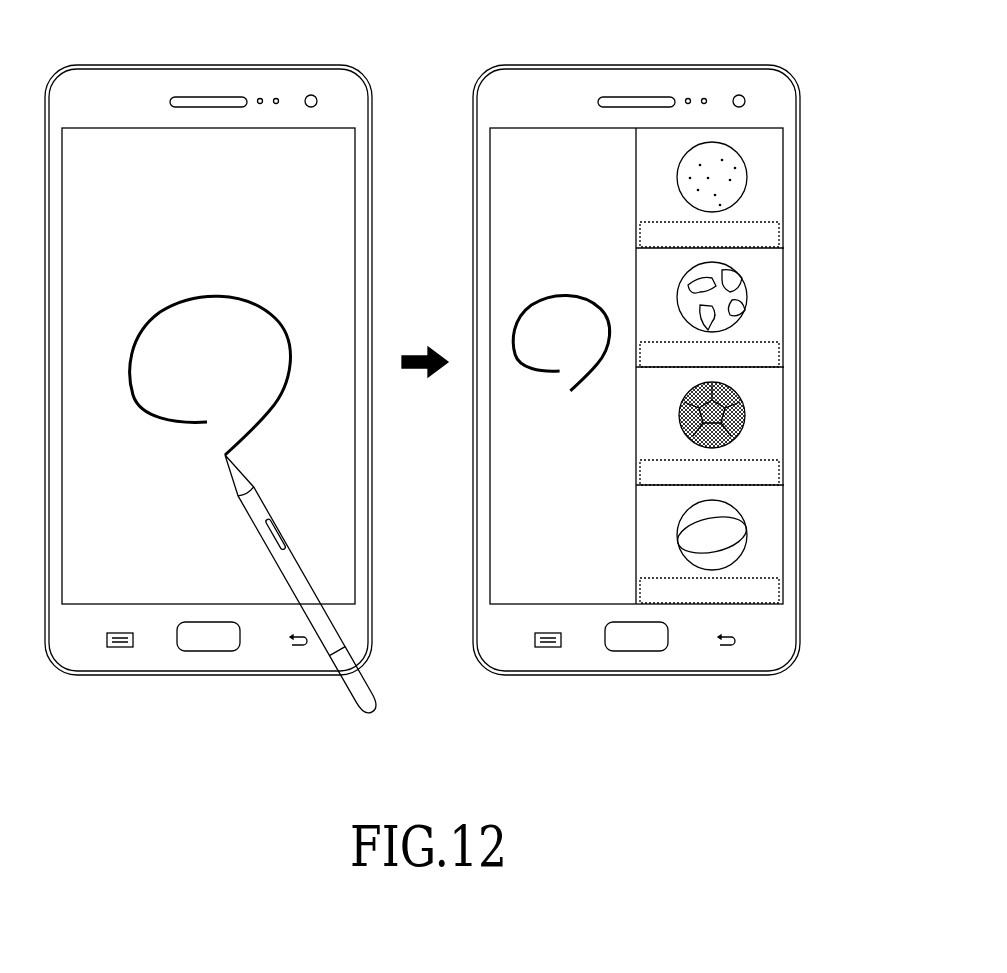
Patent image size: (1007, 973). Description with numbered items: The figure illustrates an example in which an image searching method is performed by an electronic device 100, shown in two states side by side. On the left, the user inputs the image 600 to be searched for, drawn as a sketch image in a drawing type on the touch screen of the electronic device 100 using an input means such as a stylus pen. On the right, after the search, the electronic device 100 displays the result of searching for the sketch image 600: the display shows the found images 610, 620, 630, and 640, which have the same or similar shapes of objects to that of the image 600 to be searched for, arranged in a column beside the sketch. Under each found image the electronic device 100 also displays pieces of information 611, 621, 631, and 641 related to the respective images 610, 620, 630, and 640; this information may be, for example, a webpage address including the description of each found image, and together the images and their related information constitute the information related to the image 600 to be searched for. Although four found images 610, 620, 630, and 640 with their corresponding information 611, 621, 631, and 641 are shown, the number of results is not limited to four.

The electronic device 100 is at (209, 65).
The sketch image 600 is at (172, 306).
The found image 610 is at (748, 178).
The information related to the found image 611 is at (772, 239).
The found image 620 is at (748, 298).
The information related to the found image 621 is at (772, 358).
The found image 630 is at (746, 416).
The information related to the found image 631 is at (772, 477).
The found image 640 is at (748, 536).
The information related to the found image 641 is at (772, 595).